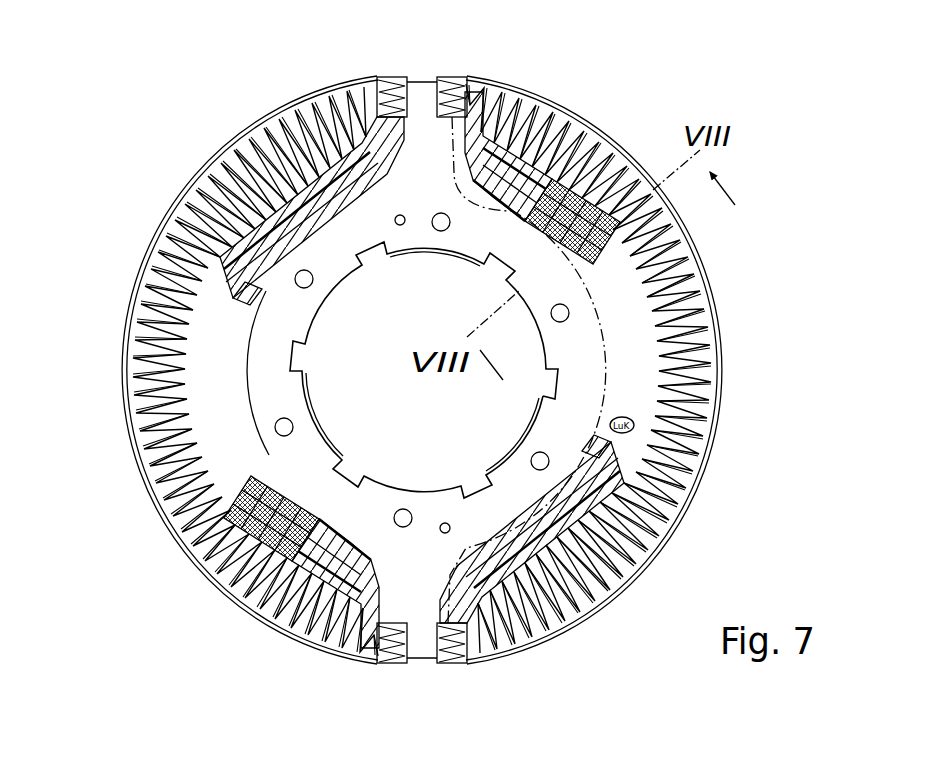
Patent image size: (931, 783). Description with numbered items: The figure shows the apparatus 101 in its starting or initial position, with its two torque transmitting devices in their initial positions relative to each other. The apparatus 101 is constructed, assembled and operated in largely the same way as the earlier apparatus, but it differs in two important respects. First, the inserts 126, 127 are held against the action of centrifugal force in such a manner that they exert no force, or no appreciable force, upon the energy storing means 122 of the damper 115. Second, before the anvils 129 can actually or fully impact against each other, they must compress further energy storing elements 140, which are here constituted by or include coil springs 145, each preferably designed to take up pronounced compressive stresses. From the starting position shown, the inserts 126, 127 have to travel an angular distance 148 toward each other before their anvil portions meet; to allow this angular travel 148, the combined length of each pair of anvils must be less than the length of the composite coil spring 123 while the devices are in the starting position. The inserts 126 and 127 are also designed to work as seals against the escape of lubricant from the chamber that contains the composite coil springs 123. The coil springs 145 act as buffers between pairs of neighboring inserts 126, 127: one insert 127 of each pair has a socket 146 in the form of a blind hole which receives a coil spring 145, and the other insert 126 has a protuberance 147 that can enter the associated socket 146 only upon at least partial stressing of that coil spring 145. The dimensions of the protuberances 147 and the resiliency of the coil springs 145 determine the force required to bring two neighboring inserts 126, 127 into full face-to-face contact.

The apparatus 101 is at (619, 41).
The damper 115 is at (239, 127).
The energy storing means 122 is at (407, 370).
The composite coil spring 123 is at (148, 312).
The insert 126 is at (568, 632).
The insert 127 is at (553, 108).
The anvil 129 is at (620, 153).
The further energy storing element 140 is at (226, 582).
The coil spring 145 is at (597, 268).
The socket 146 is at (556, 238).
The protuberance 147 is at (248, 296).
The angular distance 148 is at (234, 383).